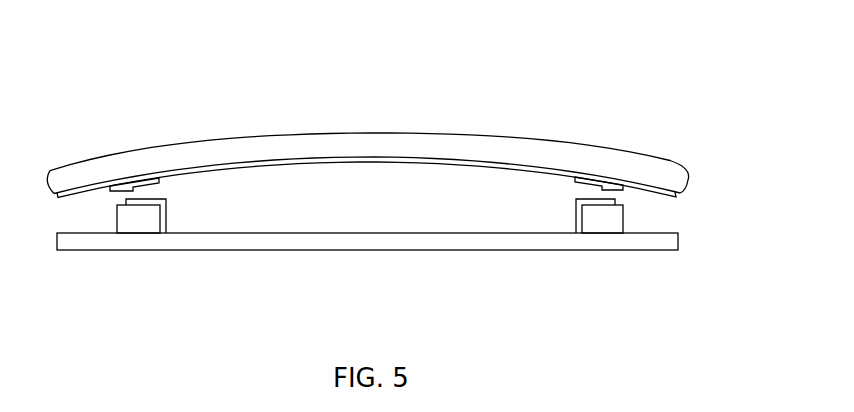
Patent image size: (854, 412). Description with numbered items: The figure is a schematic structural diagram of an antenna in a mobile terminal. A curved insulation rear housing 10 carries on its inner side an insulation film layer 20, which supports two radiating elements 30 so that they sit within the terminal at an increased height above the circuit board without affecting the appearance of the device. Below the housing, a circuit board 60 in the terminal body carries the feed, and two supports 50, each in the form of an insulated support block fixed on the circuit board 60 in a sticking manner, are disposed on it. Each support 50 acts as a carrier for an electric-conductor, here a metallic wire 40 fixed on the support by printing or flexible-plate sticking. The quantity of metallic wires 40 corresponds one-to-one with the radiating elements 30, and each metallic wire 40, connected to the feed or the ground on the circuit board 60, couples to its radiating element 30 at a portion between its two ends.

The insulation rear housing 10 is at (408, 132).
The insulation film layer 20 is at (365, 158).
The radiating element 30 is at (125, 182).
The metallic wire 40 is at (164, 213).
The support 50 is at (133, 221).
The circuit board 60 is at (335, 238).